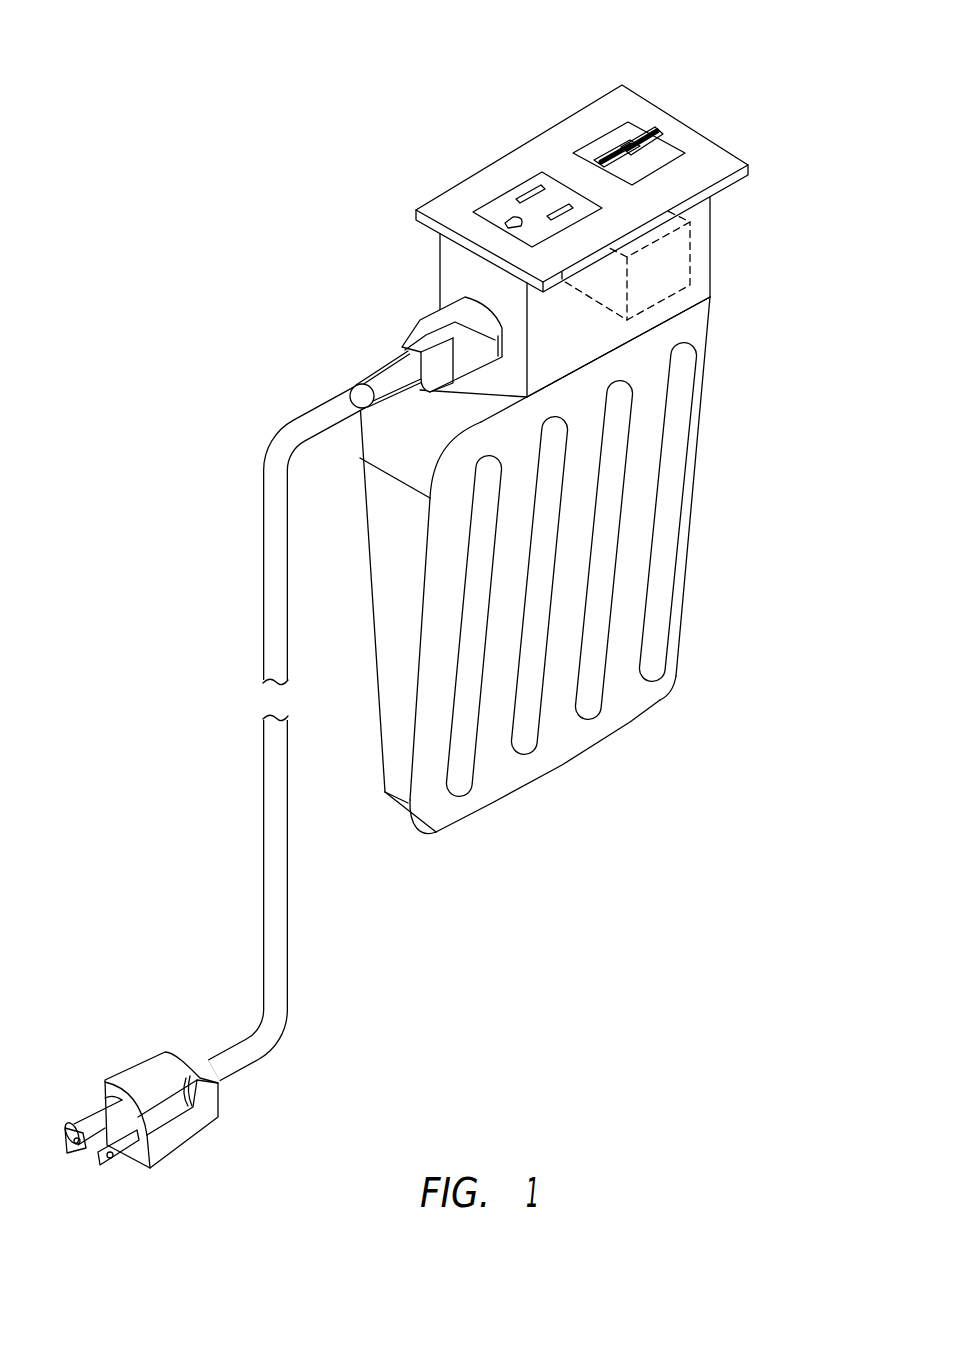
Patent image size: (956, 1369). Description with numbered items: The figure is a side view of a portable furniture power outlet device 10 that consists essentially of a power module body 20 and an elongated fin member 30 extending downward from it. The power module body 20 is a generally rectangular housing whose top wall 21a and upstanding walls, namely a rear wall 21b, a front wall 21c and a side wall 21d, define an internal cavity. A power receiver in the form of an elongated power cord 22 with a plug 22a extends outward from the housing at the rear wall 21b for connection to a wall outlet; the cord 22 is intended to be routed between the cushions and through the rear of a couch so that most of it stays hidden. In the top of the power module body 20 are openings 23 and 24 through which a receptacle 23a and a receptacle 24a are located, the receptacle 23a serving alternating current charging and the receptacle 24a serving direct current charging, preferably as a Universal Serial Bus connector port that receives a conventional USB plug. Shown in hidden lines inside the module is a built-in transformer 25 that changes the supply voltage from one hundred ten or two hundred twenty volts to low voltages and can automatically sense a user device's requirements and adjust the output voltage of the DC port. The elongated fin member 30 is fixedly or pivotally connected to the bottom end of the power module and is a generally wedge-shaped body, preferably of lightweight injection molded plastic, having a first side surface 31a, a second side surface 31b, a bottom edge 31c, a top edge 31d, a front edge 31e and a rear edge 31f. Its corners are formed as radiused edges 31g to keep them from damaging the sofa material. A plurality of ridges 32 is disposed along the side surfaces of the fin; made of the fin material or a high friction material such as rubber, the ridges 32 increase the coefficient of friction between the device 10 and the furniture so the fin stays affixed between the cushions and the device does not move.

The portable power outlet device 10 is at (340, 113).
The power module body 20 is at (812, 125).
The top wall 21a is at (550, 131).
The rear wall 21b is at (440, 270).
The front wall 21c is at (713, 237).
The side wall 21d is at (590, 340).
The power cord 22 is at (285, 441).
The plug 22a is at (152, 1075).
The opening 23 is at (522, 183).
The receptacle 23a is at (496, 195).
The opening 24 is at (620, 142).
The receptacle 24a is at (598, 160).
The transformer 25 is at (698, 296).
The elongated fin member 30 is at (812, 292).
The first side surface 31a is at (630, 562).
The second side surface 31b is at (368, 695).
The bottom edge 31c is at (562, 765).
The top edge 31d is at (690, 321).
The front edge 31e is at (695, 522).
The rear edge 31f is at (402, 588).
The radiused edges 31g is at (410, 452).
The ridges 32 is at (597, 687).